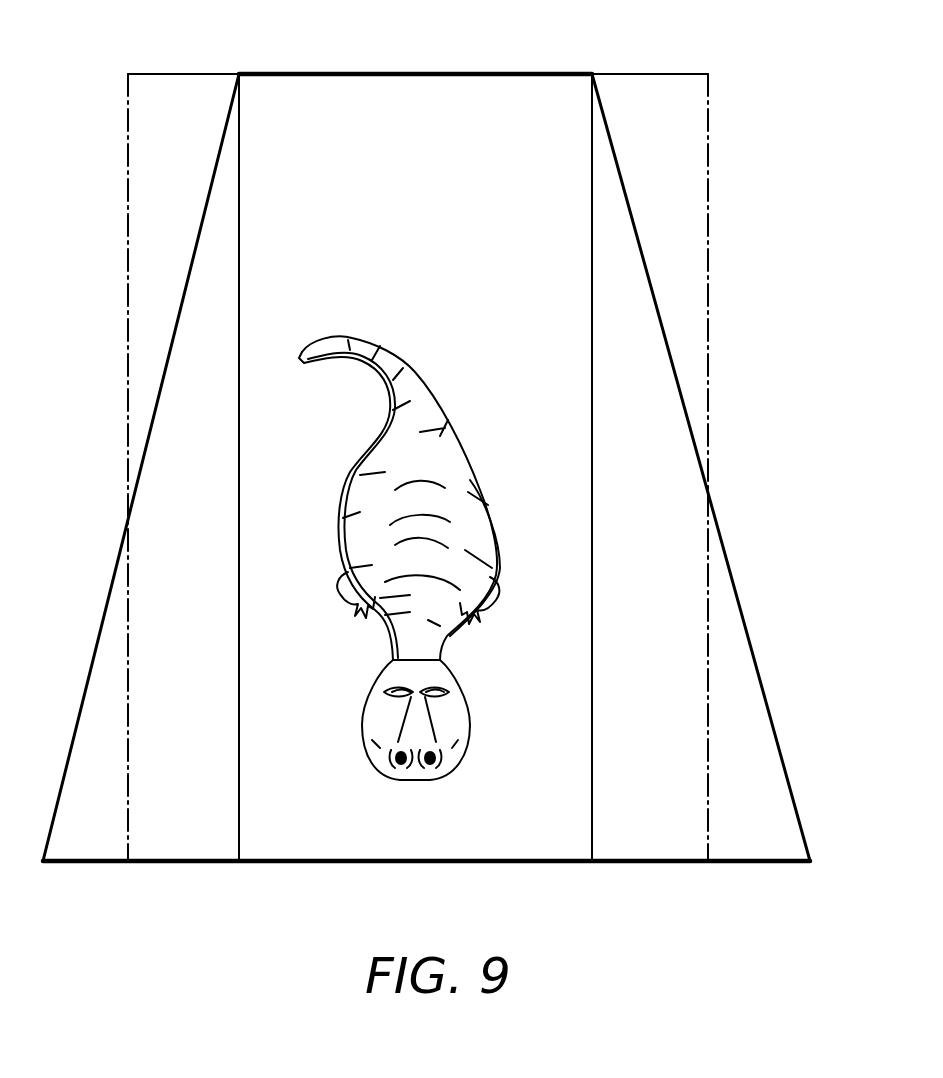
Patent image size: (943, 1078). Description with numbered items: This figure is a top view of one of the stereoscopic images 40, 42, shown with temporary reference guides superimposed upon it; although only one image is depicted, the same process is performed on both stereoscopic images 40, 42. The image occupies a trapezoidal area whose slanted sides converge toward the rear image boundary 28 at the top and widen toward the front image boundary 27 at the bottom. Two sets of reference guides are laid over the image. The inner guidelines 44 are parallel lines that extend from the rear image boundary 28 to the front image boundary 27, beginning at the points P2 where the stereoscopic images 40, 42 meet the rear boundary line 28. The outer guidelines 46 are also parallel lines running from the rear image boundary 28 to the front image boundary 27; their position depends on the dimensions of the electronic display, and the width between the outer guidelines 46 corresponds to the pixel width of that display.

The front image boundary 27 is at (562, 862).
The rear image boundary 28 is at (411, 73).
The stereoscopic image 40 is at (438, 467).
The stereoscopic image 42 is at (730, 567).
The inner guidelines 44 is at (240, 292).
The outer guidelines 46 is at (127, 289).
The points P2 is at (240, 74).